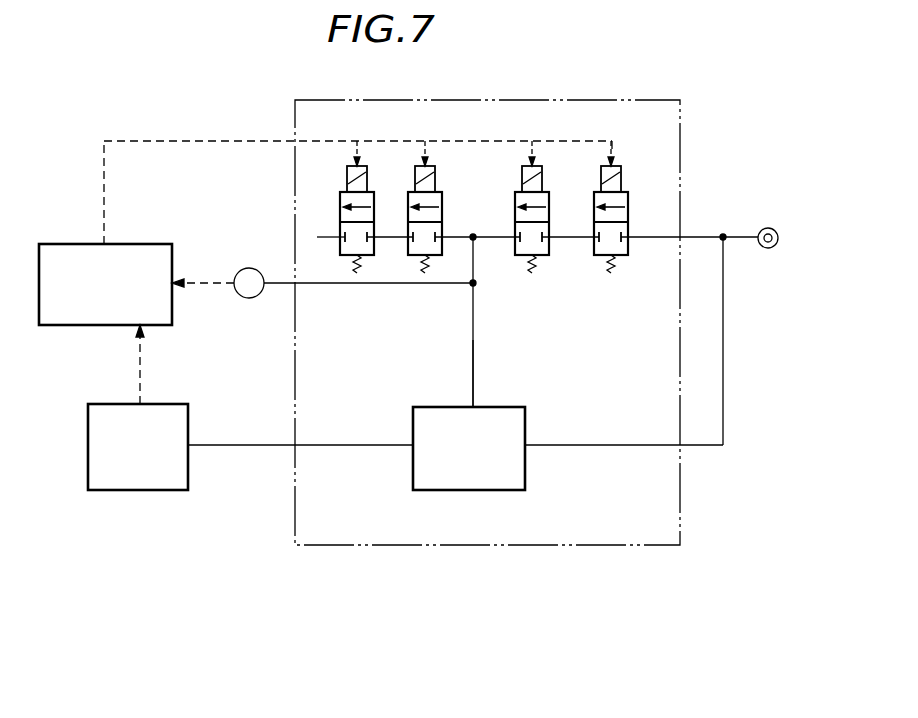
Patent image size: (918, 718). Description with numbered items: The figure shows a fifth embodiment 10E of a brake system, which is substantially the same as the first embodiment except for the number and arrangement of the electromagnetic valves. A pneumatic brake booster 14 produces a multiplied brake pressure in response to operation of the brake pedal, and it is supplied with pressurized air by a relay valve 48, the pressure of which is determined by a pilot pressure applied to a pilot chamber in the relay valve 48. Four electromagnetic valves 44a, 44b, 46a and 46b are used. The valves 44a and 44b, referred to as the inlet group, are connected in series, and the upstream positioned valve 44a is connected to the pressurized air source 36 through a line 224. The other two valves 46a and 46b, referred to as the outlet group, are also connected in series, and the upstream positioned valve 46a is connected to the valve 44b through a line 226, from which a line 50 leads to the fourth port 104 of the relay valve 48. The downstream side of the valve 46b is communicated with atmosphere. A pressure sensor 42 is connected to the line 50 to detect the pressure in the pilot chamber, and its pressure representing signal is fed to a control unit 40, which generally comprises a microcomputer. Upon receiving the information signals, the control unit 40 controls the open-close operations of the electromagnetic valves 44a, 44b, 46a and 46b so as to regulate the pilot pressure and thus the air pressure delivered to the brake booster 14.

The fifth embodiment 10E is at (473, 583).
The pneumatic brake booster 14 is at (150, 490).
The air source 36 is at (763, 227).
The control unit 40 is at (133, 244).
The pressure sensor 42 is at (246, 298).
The electromagnetic valve 44a is at (629, 198).
The electromagnetic valve 44b is at (550, 198).
The electromagnetic valve 46a is at (445, 198).
The electromagnetic valve 46b is at (377, 198).
The relay valve 48 is at (526, 423).
The line 50 is at (474, 333).
The fourth port 104 is at (474, 405).
The line 224 is at (663, 242).
The line 226 is at (460, 237).